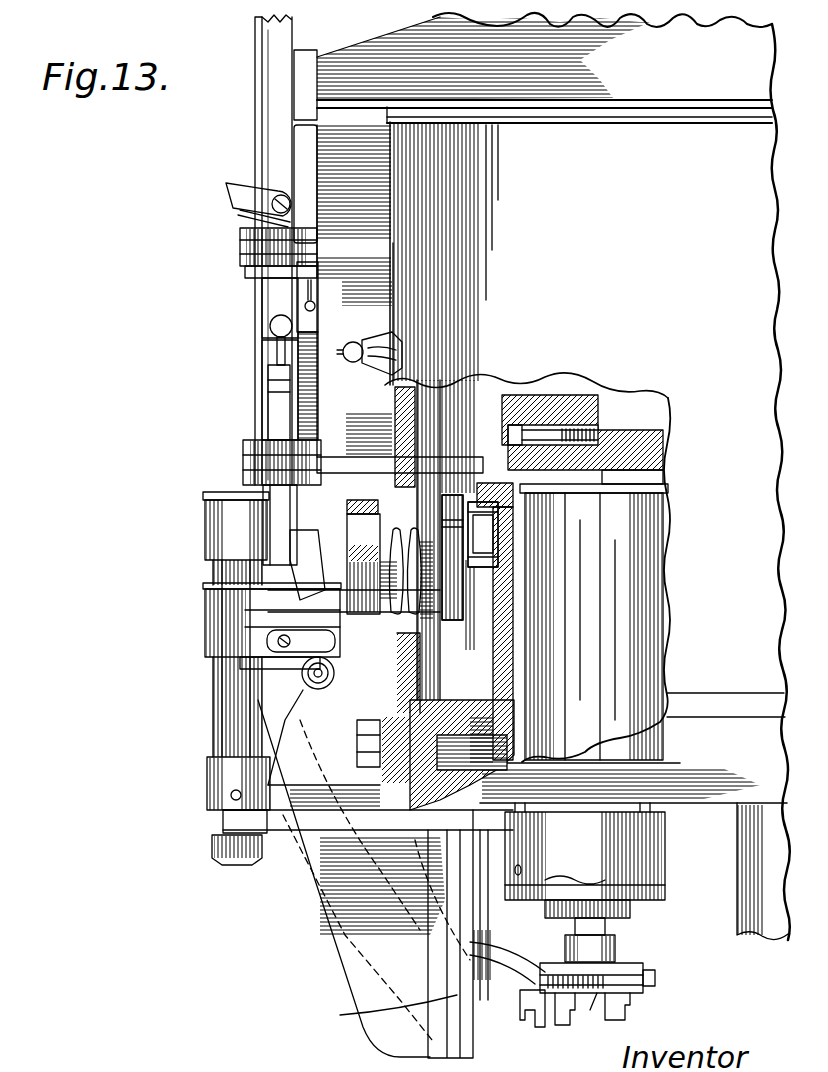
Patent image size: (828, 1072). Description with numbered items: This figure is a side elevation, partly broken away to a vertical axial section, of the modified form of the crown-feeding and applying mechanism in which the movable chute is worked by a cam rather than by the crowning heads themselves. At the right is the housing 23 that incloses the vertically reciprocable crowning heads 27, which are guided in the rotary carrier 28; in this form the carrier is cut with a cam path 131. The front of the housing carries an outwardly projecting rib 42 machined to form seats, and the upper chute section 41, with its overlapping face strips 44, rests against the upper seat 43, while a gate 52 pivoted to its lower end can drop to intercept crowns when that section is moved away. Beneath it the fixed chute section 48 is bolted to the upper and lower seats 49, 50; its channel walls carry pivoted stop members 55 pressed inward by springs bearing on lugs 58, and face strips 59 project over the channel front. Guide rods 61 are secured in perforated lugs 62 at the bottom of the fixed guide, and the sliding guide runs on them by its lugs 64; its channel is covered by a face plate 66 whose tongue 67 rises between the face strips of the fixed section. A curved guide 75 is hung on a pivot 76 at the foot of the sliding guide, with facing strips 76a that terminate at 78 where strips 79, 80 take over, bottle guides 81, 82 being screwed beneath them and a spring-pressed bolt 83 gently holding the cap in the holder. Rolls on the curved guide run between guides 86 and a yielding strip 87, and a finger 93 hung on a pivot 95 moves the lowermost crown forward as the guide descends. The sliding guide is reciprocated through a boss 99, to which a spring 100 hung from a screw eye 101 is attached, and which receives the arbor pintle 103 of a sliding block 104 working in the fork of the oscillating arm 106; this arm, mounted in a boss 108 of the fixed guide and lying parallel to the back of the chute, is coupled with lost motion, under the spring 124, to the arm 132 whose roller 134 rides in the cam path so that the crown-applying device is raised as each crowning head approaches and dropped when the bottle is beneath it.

The housing 23 is at (553, 476).
The crowning heads 27 is at (645, 614).
The rotary carrier 28 is at (640, 430).
The chute section 41 is at (272, 85).
The rib 42 is at (340, 143).
The upper seat 43 is at (305, 55).
The face strips 44 is at (255, 33).
The fixed chute section 48 is at (265, 296).
The upper seat 49 is at (248, 248).
The lower seat 50 is at (248, 453).
The gate 52 is at (228, 186).
The stop members 55 is at (270, 402).
The lugs 58 is at (270, 325).
The face strips 59 is at (252, 280).
The guide rods 61 is at (225, 696).
The perforated lugs 62 is at (236, 526).
The lugs 64 is at (210, 612).
The face plate 66 is at (245, 662).
The tongue 67 is at (225, 575).
The curved guide 75 is at (300, 885).
The pivot 76 is at (332, 682).
The facing strips 76a is at (330, 915).
The end of facing strips 78 is at (498, 1027).
The strip 79 is at (518, 1017).
The strip 80 is at (630, 998).
The bottle guide 81 is at (522, 1002).
The bottle guide 82 is at (592, 1012).
The spring-pressed bolt 83 is at (612, 982).
The guides 86 is at (374, 1014).
The yielding guide strip 87 is at (405, 1050).
The finger 93 is at (520, 957).
The pivot 95 is at (345, 948).
The boss 99 is at (290, 503).
The spring 100 is at (308, 354).
The screw eye 101 is at (323, 308).
The arbor pintle 103 is at (312, 552).
The sliding block 104 is at (378, 450).
The oscillating arm 106 is at (368, 600).
The boss 108 is at (345, 600).
The spring 124 is at (402, 655).
The cam path 131 is at (495, 528).
The arm 132 is at (462, 597).
The roller 134 is at (492, 512).